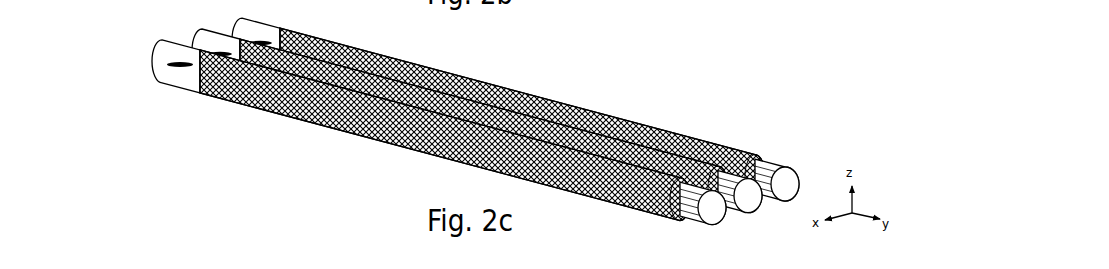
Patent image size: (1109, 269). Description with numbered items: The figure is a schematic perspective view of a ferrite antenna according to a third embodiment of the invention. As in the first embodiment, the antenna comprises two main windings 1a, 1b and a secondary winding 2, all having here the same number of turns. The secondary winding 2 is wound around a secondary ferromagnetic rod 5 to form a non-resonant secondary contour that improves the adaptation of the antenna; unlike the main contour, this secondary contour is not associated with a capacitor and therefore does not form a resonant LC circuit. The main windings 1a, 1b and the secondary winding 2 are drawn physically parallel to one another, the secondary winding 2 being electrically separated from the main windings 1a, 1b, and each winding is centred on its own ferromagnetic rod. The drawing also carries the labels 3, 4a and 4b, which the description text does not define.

The main winding 1a is at (740, 143).
The main winding 1b is at (650, 130).
The secondary winding 2 is at (560, 190).
The braided shield 3 is at (590, 111).
The first end portion 4a is at (233, 27).
The second end portion 4b is at (193, 40).
The secondary ferromagnetic rod 5 is at (153, 43).